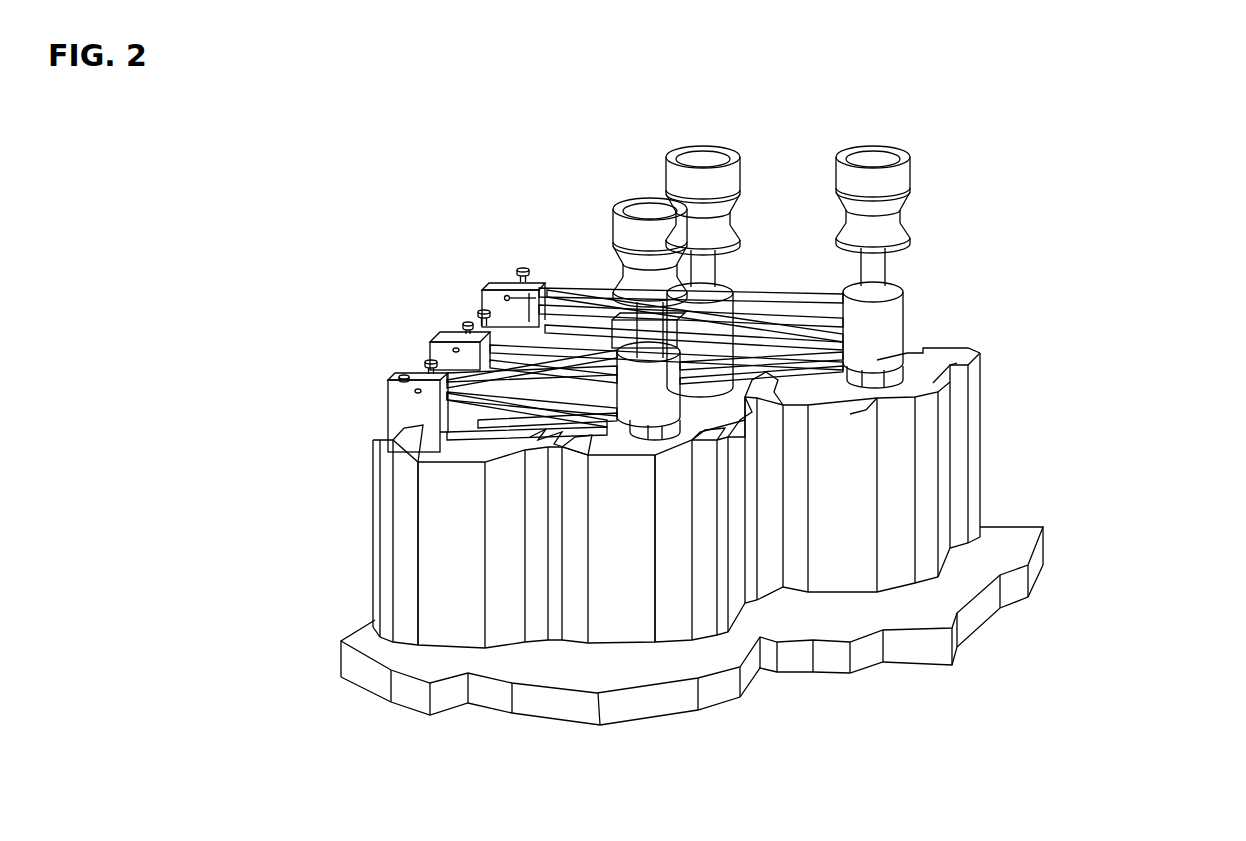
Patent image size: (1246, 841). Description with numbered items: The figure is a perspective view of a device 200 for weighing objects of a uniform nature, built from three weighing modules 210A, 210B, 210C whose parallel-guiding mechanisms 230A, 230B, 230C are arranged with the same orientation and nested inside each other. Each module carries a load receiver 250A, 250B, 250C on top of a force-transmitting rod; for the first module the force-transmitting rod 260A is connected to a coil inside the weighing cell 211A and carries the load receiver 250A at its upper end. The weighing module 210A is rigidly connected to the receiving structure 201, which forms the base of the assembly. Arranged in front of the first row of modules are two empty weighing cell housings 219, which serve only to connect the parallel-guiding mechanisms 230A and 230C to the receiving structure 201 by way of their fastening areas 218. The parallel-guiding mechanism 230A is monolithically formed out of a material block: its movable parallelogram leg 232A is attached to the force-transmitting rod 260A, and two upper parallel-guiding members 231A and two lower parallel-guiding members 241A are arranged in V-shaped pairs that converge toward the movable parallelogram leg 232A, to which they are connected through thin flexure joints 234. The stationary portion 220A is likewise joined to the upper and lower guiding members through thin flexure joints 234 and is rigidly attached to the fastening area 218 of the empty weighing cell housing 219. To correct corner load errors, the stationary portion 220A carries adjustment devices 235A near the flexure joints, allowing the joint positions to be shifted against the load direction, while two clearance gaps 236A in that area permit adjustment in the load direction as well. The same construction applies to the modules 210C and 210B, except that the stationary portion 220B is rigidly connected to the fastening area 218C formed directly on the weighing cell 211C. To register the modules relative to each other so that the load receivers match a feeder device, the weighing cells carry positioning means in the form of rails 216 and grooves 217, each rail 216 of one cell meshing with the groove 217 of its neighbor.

The device for weighing objects 200 is at (1009, 218).
The receiving structure 201 is at (367, 672).
The weighing module 210A is at (642, 572).
The weighing module 210B is at (896, 490).
The weighing module 210C is at (757, 193).
The weighing cell 211A is at (707, 425).
The weighing cell 211C is at (857, 422).
The rail 216 is at (857, 425).
The groove 217 is at (953, 390).
The fastening area 218 is at (438, 440).
The fastening area 218C is at (612, 392).
The empty weighing cell housing 219 is at (434, 543).
The stationary portion 220A is at (407, 418).
The stationary portion 220B is at (608, 322).
The parallel-guiding mechanism 230A is at (526, 439).
The parallel-guiding mechanism 230B is at (697, 217).
The parallel-guiding mechanism 230C is at (565, 259).
The upper parallel-guiding members 231A is at (490, 312).
The movable parallelogram leg 232A is at (650, 395).
The thin flexure joints 234 is at (524, 392).
The adjustment devices 235A is at (422, 365).
The clearance gaps 236A is at (406, 385).
The lower parallel-guiding members 241A is at (544, 418).
The load receiver 250A is at (641, 237).
The load receiver 250B is at (870, 183).
The load receiver 250C is at (708, 183).
The force-transmitting rod 260A is at (648, 338).